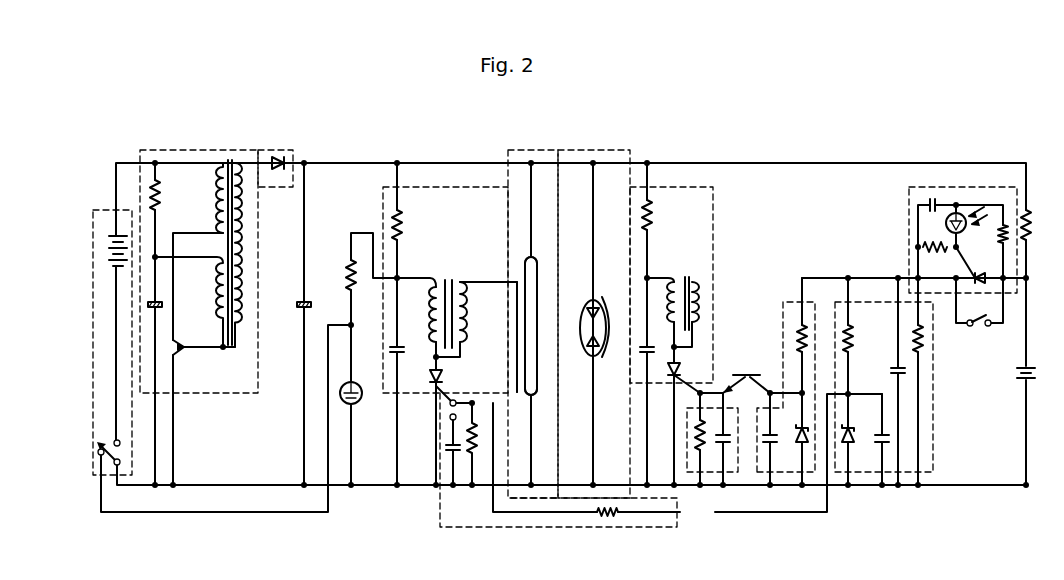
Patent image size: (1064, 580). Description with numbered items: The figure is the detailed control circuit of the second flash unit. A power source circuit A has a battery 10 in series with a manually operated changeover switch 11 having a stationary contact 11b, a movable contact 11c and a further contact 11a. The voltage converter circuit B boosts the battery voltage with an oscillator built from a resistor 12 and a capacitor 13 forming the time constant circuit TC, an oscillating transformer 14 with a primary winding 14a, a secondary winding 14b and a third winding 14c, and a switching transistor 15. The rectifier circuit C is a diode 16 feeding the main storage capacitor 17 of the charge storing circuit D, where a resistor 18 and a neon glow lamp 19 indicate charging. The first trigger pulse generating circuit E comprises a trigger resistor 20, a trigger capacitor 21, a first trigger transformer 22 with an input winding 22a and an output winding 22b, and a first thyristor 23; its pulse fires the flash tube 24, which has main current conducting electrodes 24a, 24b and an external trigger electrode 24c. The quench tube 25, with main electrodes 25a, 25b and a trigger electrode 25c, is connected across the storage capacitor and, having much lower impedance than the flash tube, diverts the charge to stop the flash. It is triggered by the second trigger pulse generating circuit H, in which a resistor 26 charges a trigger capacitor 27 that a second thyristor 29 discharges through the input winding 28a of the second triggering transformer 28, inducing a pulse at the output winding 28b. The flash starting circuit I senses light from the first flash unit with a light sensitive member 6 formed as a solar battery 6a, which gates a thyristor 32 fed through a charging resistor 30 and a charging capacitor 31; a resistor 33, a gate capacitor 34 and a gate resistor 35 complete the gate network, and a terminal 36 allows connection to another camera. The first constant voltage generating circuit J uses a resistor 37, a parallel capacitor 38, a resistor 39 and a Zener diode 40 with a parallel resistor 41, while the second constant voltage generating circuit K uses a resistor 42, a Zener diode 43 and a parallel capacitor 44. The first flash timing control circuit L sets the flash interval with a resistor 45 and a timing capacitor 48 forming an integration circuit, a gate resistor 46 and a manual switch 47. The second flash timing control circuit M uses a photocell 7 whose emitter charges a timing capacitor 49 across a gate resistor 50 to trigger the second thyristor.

The light sensitive member 6 is at (962, 203).
The solar battery 6a is at (985, 212).
The photocell 7 is at (746, 375).
The battery 10 is at (108, 248).
The changeover switch 11 is at (95, 445).
The switch contact 11a is at (113, 438).
The stationary contact 11b is at (99, 455).
The movable contact 11c is at (101, 458).
The resistor 12 is at (156, 208).
The capacitor 13 is at (158, 308).
The oscillating transformer 14 is at (229, 161).
The primary winding 14a is at (214, 220).
The secondary winding 14b is at (246, 262).
The third winding 14c is at (215, 272).
The transistor 15 is at (185, 351).
The diode 16 is at (279, 172).
The main storage capacitor 17 is at (301, 310).
The resistor 18 is at (347, 274).
The neon glow lamp 19 is at (366, 380).
The trigger resistor 20 is at (400, 226).
The trigger capacitor 21 is at (400, 345).
The first trigger transformer 22 is at (449, 281).
The input winding 22a is at (432, 290).
The output winding 22b is at (482, 306).
The first thyristor 23 is at (439, 375).
The flash tube 24 is at (538, 272).
The main current conducting electrode 24a is at (534, 258).
The main current conducting electrode 24b is at (534, 395).
The trigger electrode 24c is at (515, 350).
The quench tube 25 is at (586, 338).
The main electrode 25a is at (584, 312).
The main electrode 25b is at (589, 358).
The trigger electrode 25c is at (608, 352).
The resistor 26 is at (651, 220).
The trigger capacitor 27 is at (644, 346).
The second triggering transformer 28 is at (688, 273).
The input winding 28a is at (670, 283).
The output winding 28b is at (703, 307).
The second thyristor 29 is at (679, 372).
The charging resistor 30 is at (1040, 228).
The charging capacitor 31 is at (1030, 372).
The thyristor 32 is at (978, 275).
The resistor 33 is at (1006, 246).
The gate capacitor 34 is at (928, 203).
The gate resistor 35 is at (920, 250).
The terminal 36 is at (980, 328).
The resistor 37 is at (922, 340).
The capacitor 38 is at (896, 374).
The resistor 39 is at (852, 342).
The Zener diode 40 is at (849, 447).
The parallel resistor 41 is at (884, 447).
The resistor 42 is at (798, 340).
The Zener diode 43 is at (804, 447).
The capacitor 44 is at (772, 447).
The resistor 45 is at (607, 518).
The gate resistor 46 is at (474, 457).
The flash timing adjusting switch 47 is at (446, 406).
The timing capacitor 48 is at (447, 448).
The timing capacitor 49 is at (726, 447).
The gate resistor 50 is at (702, 455).